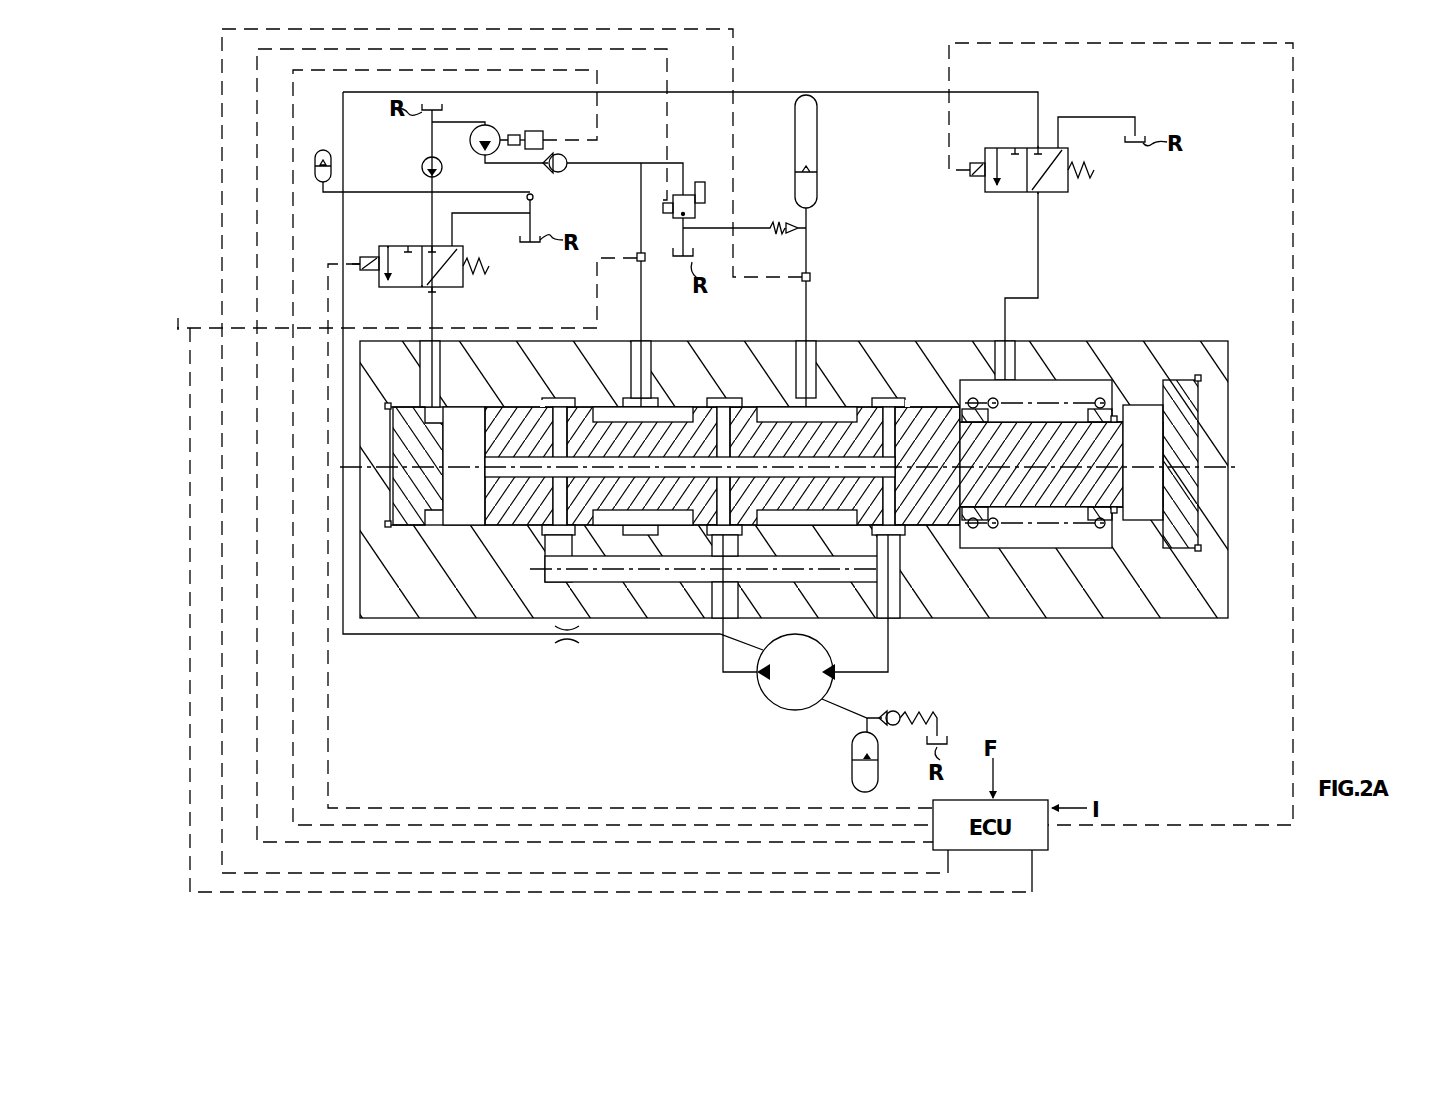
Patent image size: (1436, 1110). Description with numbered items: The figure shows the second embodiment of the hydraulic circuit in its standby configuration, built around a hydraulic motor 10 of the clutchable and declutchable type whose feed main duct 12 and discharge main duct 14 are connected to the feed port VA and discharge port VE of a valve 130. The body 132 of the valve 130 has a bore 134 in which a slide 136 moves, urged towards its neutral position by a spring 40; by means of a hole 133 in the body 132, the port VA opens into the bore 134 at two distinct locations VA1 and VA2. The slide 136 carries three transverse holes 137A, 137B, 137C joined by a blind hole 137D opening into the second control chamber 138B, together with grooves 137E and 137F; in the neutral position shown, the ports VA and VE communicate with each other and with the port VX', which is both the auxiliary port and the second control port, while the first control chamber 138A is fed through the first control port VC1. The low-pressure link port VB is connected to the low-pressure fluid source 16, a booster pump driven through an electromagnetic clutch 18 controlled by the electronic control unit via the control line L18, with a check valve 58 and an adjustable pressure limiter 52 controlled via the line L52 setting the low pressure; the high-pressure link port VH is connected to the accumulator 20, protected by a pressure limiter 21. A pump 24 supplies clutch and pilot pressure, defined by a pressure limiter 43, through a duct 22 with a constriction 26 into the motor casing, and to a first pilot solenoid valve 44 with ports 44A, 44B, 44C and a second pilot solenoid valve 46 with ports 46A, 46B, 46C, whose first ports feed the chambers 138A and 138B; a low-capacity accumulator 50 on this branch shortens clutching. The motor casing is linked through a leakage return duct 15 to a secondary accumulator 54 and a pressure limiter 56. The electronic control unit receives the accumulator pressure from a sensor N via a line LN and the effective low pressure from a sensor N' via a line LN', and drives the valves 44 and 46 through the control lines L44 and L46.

The hydraulic motor 10 is at (790, 705).
The feed main duct 12 is at (864, 673).
The discharge main duct 14 is at (736, 678).
The leakage return duct 15 is at (844, 707).
The low-pressure fluid source 16 is at (496, 128).
The electromagnetic clutch 18 is at (540, 130).
The accumulator 20 is at (795, 152).
The pressure limiter 21 is at (782, 228).
The duct 22 is at (638, 634).
The pump 24 is at (420, 166).
The constriction 26 is at (568, 641).
The spring 40 is at (1076, 386).
The pressure limiter 43 is at (535, 198).
The first pilot solenoid valve 44 is at (1084, 195).
The first port 44A is at (1037, 192).
The second port 44B is at (1037, 147).
The third port 44C is at (1058, 149).
The second pilot solenoid valve 46 is at (486, 289).
The first port 46A is at (428, 287).
The second port 46B is at (430, 246).
The third port 46C is at (454, 246).
The accumulator 50 is at (322, 148).
The adjustable pressure limiter 52 is at (663, 205).
The secondary accumulator 54 is at (850, 772).
The pressure limiter 56 is at (895, 710).
The check valve 58 is at (578, 156).
The valve 130 is at (1048, 633).
The body 132 is at (1152, 606).
The hole 133 is at (540, 570).
The bore 134 is at (452, 512).
The slide 136 is at (1160, 490).
The transverse hole 137A is at (885, 445).
The transverse hole 137B is at (725, 497).
The transverse hole 137C is at (557, 497).
The blind hole 137D is at (677, 465).
The groove 137E is at (678, 505).
The groove 137F is at (817, 513).
The first control chamber 138A is at (1150, 447).
The second control chamber 138B is at (469, 425).
The control line L18 is at (293, 135).
The control line L52 is at (257, 205).
The line LN is at (555, 451).
The line LN' is at (594, 575).
The control line L46 is at (533, 808).
The control line L44 is at (1175, 825).
The pressure sensor N is at (793, 302).
The sensor N' is at (656, 274).
The feed port VA is at (897, 617).
The first orifice VA1 is at (893, 517).
The second orifice VA2 is at (553, 515).
The low-pressure link port VB is at (670, 346).
The first control port VC1 is at (980, 353).
The discharge port VE is at (703, 606).
The high-pressure link port VH is at (836, 346).
The port VX' is at (404, 374).